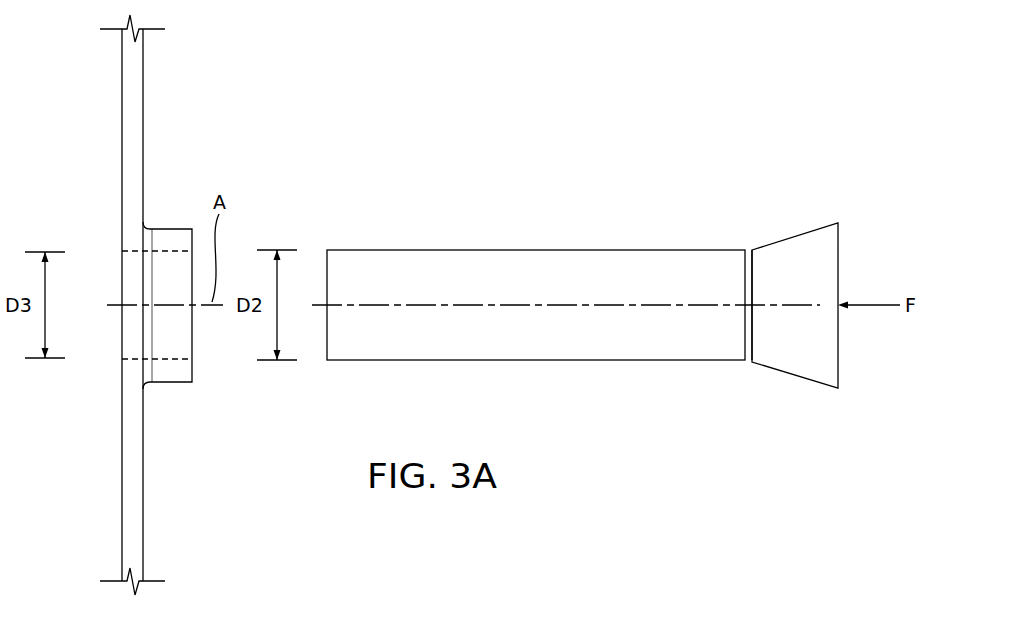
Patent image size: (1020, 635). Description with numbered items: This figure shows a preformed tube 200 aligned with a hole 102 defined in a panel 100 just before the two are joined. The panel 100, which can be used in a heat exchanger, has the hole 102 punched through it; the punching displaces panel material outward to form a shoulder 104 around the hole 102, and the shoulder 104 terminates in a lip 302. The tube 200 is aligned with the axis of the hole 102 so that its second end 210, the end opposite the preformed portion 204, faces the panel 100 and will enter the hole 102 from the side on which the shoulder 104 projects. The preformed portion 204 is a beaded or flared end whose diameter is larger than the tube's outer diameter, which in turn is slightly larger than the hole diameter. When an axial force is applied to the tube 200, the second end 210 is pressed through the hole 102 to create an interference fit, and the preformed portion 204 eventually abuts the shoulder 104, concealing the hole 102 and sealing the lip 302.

The panel 100 is at (143, 100).
The hole 102 is at (117, 298).
The shoulder 104 is at (172, 229).
The lip of the shoulder 302 is at (192, 372).
The tube 200 is at (565, 260).
The preformed portion 204 is at (785, 235).
The second end 210 is at (327, 281).